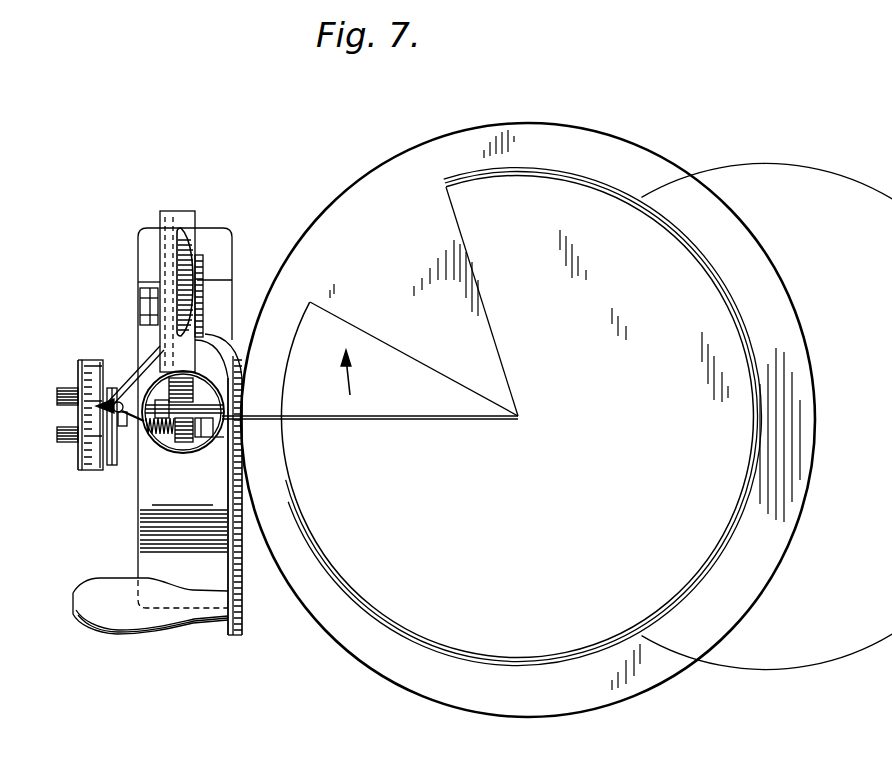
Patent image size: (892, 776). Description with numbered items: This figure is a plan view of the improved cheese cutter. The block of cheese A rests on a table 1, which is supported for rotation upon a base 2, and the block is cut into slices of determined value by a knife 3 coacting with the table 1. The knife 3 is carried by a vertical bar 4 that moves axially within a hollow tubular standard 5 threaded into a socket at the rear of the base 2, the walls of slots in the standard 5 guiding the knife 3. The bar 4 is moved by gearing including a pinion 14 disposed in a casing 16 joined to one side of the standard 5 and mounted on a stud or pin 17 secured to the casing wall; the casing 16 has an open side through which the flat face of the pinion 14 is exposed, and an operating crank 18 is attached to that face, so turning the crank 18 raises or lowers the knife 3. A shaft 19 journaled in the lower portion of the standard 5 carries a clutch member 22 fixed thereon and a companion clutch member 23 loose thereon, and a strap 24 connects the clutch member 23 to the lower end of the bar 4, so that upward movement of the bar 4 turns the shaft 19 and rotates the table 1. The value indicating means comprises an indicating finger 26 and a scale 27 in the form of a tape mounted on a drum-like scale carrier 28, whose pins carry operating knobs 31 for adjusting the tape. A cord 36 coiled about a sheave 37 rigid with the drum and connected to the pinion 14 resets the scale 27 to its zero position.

The table 1 is at (515, 714).
The block of cheese A is at (604, 640).
The base 2 is at (150, 562).
The knife 3 is at (447, 421).
The vertical bar 4 is at (177, 440).
The standard 5 is at (148, 462).
The pinion 14 is at (190, 245).
The casing 16 is at (165, 260).
The stud or pin 17 is at (140, 300).
The operating crank 18 is at (256, 580).
The shaft 19 is at (225, 430).
The clutch member 22 is at (215, 428).
The companion clutch member 23 is at (230, 440).
The strap 24 is at (186, 442).
The indicating finger 26 is at (126, 382).
The scale 27 is at (110, 478).
The scale carrier 28 is at (100, 472).
The operating knobs 31 is at (68, 388).
The cord 36 is at (142, 345).
The sheave 37 is at (110, 428).